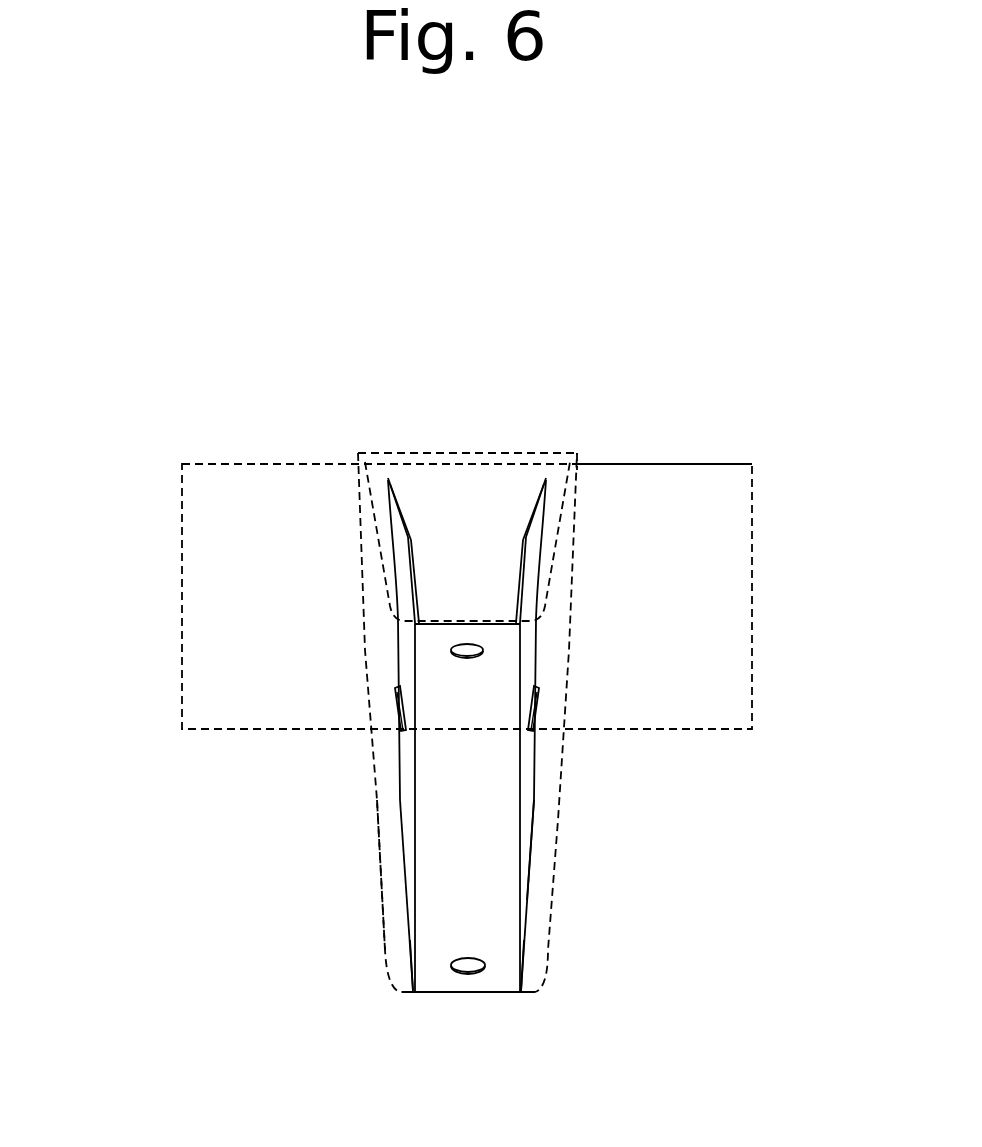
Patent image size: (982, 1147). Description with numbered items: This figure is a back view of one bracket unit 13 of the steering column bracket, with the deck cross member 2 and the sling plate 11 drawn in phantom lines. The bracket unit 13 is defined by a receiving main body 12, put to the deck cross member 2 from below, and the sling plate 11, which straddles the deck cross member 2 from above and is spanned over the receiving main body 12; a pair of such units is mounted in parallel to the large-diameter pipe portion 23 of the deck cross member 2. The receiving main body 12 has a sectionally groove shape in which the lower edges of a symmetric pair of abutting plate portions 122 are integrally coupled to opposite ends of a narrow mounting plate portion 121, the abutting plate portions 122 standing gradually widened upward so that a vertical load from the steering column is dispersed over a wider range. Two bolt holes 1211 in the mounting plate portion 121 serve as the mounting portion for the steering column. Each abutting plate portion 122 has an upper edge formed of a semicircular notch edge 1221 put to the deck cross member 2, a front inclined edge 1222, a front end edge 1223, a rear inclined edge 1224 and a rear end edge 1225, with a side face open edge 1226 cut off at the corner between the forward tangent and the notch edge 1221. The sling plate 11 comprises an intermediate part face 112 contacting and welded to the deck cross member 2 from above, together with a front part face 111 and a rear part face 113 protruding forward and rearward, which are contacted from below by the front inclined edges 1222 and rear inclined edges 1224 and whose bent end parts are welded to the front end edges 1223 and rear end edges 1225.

The deck cross member 2 is at (250, 464).
The sling plate 11 is at (427, 453).
The intermediate part face 112 is at (467, 453).
The bracket unit 13 is at (557, 452).
The large-diameter pipe portion 23 is at (660, 463).
The rear part face 113 is at (473, 603).
The rear inclined edge 1224 is at (412, 508).
The rear end edge 1225 is at (412, 587).
The notch edge 1221 is at (403, 668).
The bolt hole 1211 is at (484, 653).
The side face open edge 1226 is at (396, 712).
The front inclined edge 1222 is at (410, 780).
The abutting plate portion 122 is at (404, 815).
The front part face 111 is at (390, 862).
The receiving main body 12 is at (525, 842).
The front end edge 1223 is at (407, 942).
The mounting plate portion 121 is at (440, 982).